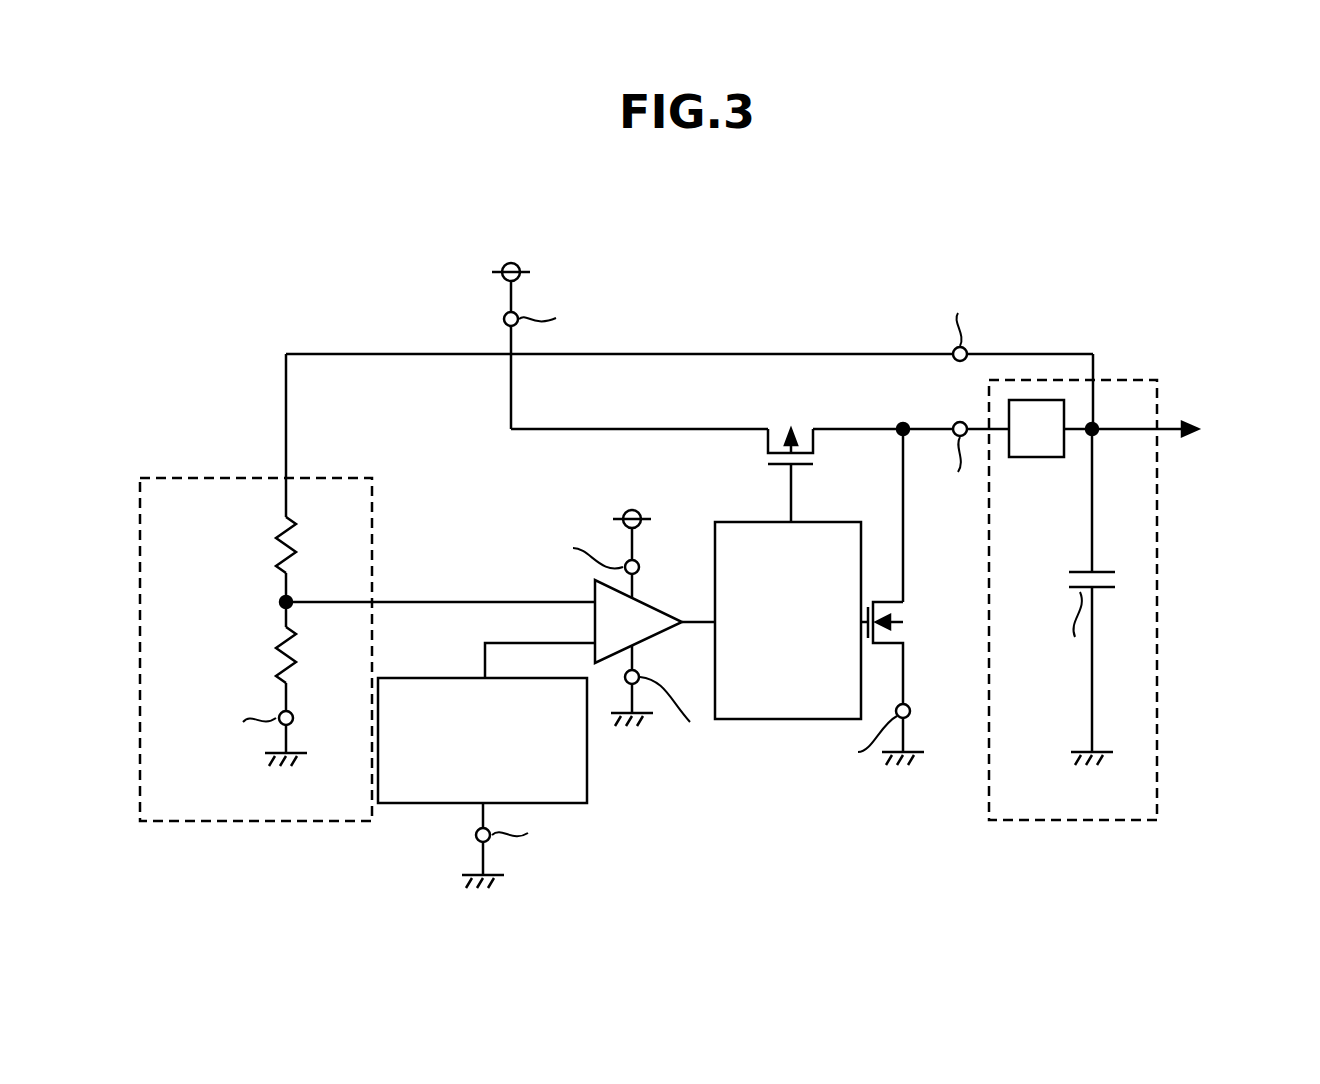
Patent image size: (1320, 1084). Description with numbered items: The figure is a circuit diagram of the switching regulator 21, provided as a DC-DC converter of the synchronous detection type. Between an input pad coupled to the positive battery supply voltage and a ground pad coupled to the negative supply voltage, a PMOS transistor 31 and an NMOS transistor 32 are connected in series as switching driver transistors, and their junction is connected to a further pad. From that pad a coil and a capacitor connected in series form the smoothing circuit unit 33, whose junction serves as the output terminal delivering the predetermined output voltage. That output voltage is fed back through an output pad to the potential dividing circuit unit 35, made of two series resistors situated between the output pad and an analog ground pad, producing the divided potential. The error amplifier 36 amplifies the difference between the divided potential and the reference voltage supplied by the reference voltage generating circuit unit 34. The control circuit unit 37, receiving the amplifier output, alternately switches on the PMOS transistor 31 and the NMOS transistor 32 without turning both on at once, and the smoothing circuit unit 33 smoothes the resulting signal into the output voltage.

The switching regulator 21 is at (818, 325).
The PMOS transistor 31 is at (763, 464).
The NMOS transistor 32 is at (873, 600).
The smoothing circuit unit 33 is at (1028, 830).
The reference voltage generating circuit unit 34 is at (425, 803).
The potential dividing circuit unit 35 is at (382, 523).
The error amplifier 36 is at (652, 608).
The control circuit unit 37 is at (768, 721).